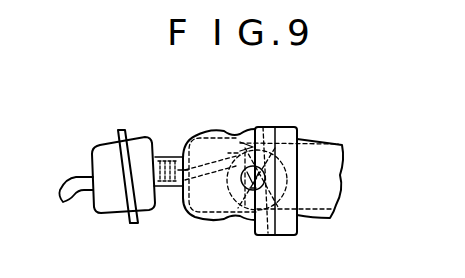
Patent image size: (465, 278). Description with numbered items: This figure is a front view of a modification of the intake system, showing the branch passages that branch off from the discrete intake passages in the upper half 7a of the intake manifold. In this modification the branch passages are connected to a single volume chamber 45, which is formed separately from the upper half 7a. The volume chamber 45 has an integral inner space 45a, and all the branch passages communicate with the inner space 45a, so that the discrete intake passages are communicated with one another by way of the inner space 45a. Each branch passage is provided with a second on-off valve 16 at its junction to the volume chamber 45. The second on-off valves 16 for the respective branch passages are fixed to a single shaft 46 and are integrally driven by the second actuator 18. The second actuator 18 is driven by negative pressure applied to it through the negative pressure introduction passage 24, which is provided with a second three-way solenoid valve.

The second actuator 18 is at (100, 152).
The negative pressure introduction passage 24 is at (68, 193).
The volume chamber 45 is at (212, 129).
The inner space 45a is at (201, 214).
The second on-off valve 16 is at (271, 127).
The shaft 46 is at (256, 214).
The upper half 7a is at (330, 141).